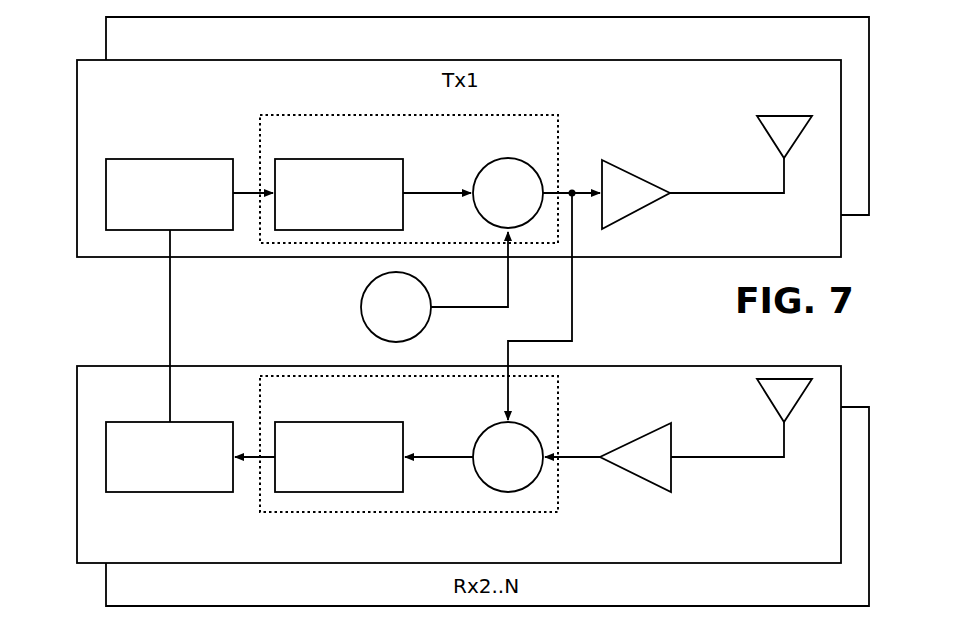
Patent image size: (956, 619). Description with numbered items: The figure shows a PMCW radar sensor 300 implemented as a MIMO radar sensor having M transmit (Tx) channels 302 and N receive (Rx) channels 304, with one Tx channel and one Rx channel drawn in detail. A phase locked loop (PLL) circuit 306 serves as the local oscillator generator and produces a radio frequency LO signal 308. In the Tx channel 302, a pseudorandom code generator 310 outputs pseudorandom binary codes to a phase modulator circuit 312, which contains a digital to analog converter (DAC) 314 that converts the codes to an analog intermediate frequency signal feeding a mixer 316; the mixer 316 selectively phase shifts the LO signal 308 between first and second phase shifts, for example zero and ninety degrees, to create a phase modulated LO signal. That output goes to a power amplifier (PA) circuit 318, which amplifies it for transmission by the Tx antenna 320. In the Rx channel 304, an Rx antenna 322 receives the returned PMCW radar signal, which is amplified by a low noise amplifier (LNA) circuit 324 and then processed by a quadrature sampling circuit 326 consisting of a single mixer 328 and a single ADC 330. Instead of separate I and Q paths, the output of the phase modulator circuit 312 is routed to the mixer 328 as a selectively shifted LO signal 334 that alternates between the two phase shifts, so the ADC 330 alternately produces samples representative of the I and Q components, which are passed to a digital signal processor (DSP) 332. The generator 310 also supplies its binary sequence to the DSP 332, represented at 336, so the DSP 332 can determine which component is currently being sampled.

The PMCW radar sensor 300 is at (58, 68).
The transmit (Tx) channels 302 is at (200, 60).
The receive (Rx) channels 304 is at (150, 366).
The phase locked loop (PLL) circuit 306 is at (362, 300).
The LO signal 308 is at (503, 305).
The pseudorandom code generator 310 is at (160, 159).
The phase modulator circuit 312 is at (315, 115).
The digital to analog converter (DAC) 314 is at (350, 159).
The mixer 316 is at (515, 158).
The power amplifier (PA) circuit 318 is at (625, 173).
The Tx antenna 320 is at (784, 116).
The Rx antenna 322 is at (780, 382).
The low noise amplifier (LNA) circuit 324 is at (640, 440).
The quadrature sampling circuit 326 is at (303, 512).
The mixer 328 is at (495, 425).
The ADC 330 is at (347, 422).
The digital signal processor (DSP) 332 is at (160, 422).
The selectively shifted LO signal 334 is at (507, 346).
The binary sequence output to DSP 336 is at (170, 300).